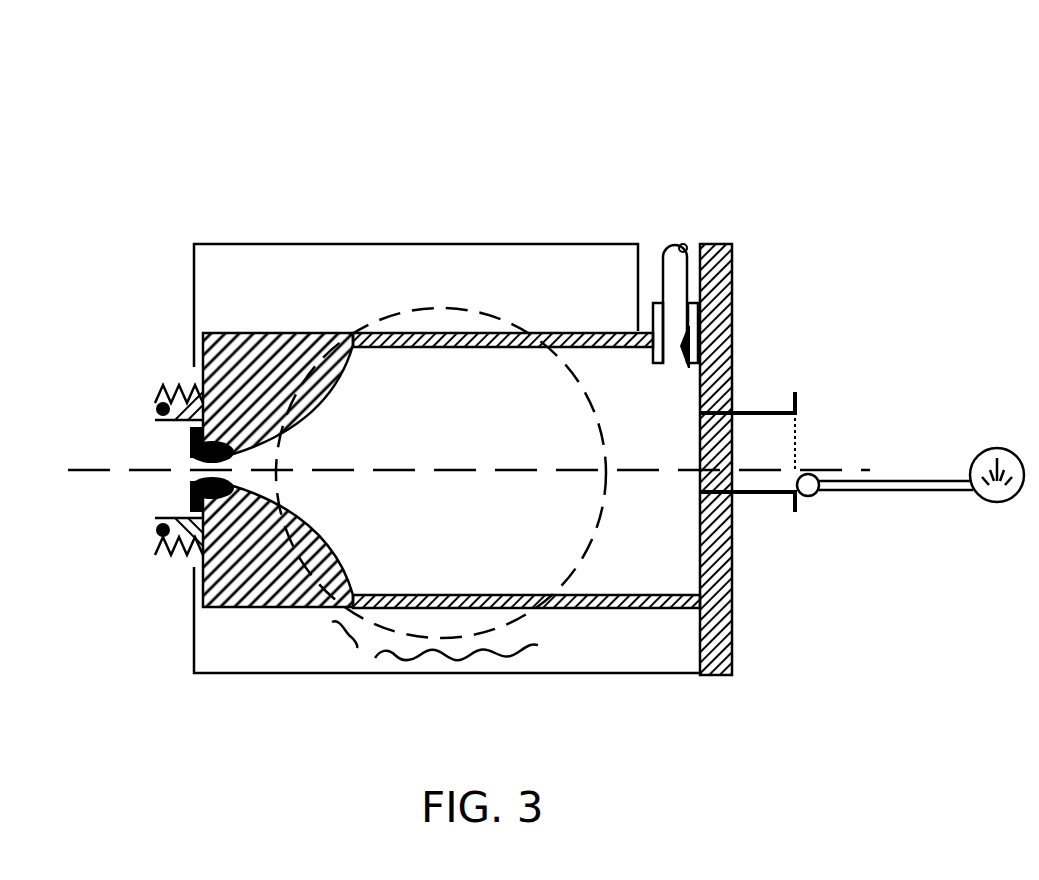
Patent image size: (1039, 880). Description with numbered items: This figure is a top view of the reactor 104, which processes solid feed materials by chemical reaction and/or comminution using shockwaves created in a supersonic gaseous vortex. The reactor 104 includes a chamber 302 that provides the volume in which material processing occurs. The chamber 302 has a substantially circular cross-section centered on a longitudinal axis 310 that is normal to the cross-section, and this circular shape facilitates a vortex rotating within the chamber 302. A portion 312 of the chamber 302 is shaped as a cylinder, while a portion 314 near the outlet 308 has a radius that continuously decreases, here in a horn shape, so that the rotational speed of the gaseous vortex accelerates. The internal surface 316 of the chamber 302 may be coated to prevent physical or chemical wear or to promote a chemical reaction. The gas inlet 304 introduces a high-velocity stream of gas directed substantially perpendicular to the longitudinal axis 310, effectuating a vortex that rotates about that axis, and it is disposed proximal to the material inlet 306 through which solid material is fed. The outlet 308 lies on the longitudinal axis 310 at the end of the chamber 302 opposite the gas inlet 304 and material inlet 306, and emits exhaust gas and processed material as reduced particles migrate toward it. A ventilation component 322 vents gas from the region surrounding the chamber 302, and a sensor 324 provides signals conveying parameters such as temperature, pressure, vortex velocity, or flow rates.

The reactor 104 is at (850, 100).
The chamber 302 is at (733, 662).
The gas inlet 304 is at (675, 312).
The material inlet 306 is at (744, 413).
The outlet 308 is at (200, 474).
The longitudinal axis 310 is at (486, 469).
The portion of chamber shaped as a cylinder 312 is at (466, 347).
The portion of chamber with continuously decreasing radius 314 is at (337, 383).
The internal surface 316 is at (602, 594).
The ventilation component 322 is at (467, 306).
The sensor 324 is at (808, 498).